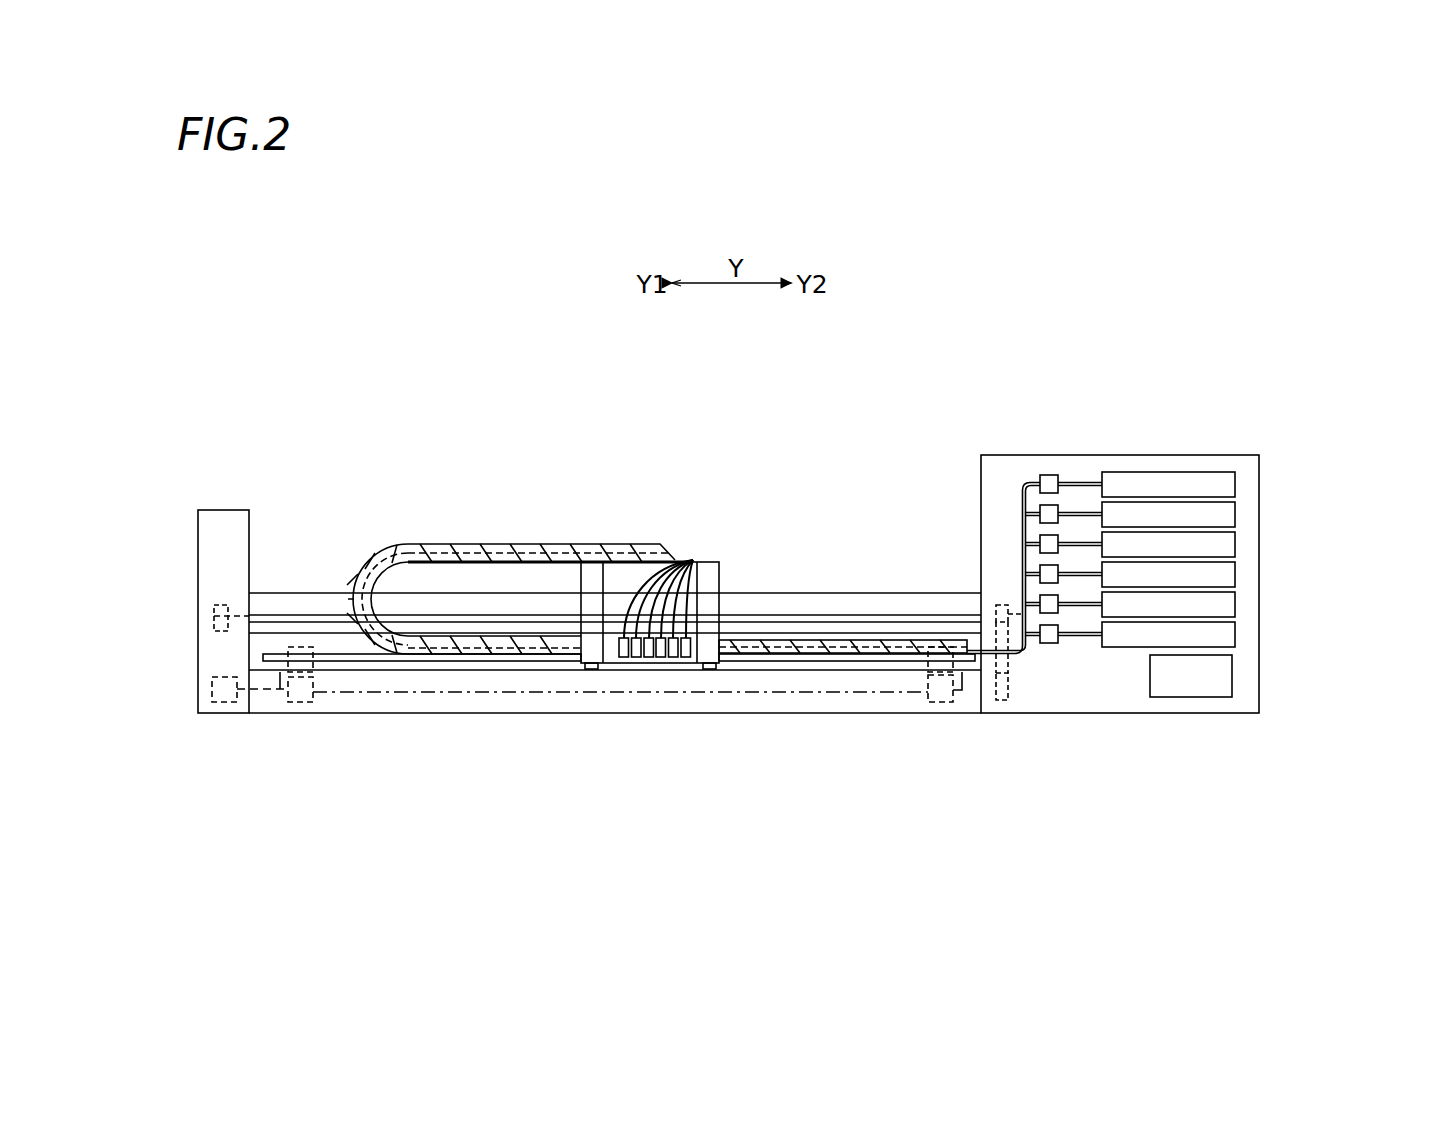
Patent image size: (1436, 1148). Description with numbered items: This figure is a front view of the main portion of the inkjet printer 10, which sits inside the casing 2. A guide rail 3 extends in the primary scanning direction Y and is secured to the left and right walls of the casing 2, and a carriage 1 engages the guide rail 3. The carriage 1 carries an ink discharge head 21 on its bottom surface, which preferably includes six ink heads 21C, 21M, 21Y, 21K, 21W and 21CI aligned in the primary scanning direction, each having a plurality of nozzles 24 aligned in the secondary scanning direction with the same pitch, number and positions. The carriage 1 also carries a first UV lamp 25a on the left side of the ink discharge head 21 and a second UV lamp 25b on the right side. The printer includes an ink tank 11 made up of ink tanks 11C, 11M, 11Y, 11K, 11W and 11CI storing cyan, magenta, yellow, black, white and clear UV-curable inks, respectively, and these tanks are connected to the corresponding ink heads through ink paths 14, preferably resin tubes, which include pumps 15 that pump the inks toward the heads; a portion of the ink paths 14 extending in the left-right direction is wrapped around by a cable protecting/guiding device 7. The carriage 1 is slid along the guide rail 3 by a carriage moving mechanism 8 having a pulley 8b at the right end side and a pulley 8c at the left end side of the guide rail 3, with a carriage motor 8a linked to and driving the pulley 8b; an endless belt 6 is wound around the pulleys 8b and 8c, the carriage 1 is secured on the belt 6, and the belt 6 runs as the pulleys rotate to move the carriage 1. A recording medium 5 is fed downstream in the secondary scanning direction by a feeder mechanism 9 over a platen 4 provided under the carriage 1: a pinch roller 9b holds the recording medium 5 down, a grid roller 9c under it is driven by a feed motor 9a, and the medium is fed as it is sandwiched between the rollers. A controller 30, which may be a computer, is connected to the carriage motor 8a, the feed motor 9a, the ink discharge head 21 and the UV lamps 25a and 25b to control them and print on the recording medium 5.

The carriage 1 is at (740, 657).
The casing 2 is at (1196, 452).
The guide rail 3 is at (938, 605).
The platen 4 is at (895, 700).
The recording medium 5 is at (490, 700).
The belt 6 is at (888, 612).
The cable protecting/guiding device 7 is at (408, 545).
The carriage moving mechanism 8 is at (984, 702).
The carriage motor 8a is at (1008, 700).
The pulley 8b is at (1030, 645).
The pulley 8c is at (222, 604).
The feeder mechanism 9 is at (338, 700).
The feed motor 9a is at (219, 702).
The pinch roller 9b is at (300, 647).
The grid roller 9c is at (300, 702).
The inkjet printer 10 is at (1166, 353).
The ink tank 11 is at (1362, 487).
The ink tank 11C is at (1235, 480).
The ink tank 11M is at (1235, 510).
The ink tank 11Y is at (1235, 540).
The ink tank 11K is at (1235, 578).
The ink tank 11W is at (1235, 612).
The ink tank 11CI is at (1235, 642).
The ink path 14 is at (840, 640).
The pump 15 is at (1058, 478).
The ink discharge head 21 is at (503, 478).
The ink head 21C is at (600, 605).
The ink head 21M is at (625, 605).
The ink head 21Y is at (642, 605).
The ink head 21K is at (680, 600).
The ink head 21W is at (703, 598).
The ink head 21CI is at (722, 593).
The nozzles 24 is at (624, 657).
The first UV lamp 25a is at (591, 669).
The second UV lamp 25b is at (709, 669).
The controller 30 is at (1197, 697).